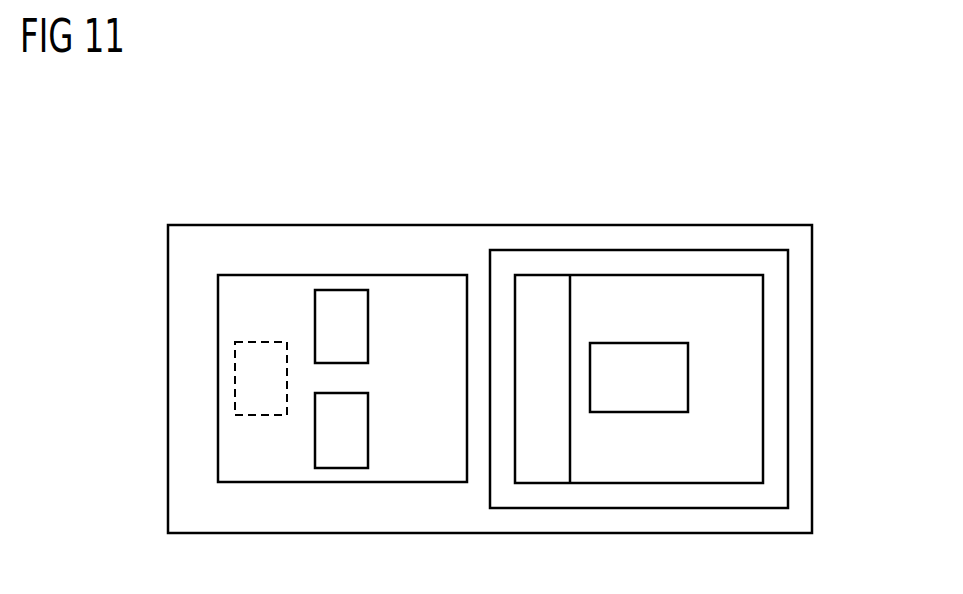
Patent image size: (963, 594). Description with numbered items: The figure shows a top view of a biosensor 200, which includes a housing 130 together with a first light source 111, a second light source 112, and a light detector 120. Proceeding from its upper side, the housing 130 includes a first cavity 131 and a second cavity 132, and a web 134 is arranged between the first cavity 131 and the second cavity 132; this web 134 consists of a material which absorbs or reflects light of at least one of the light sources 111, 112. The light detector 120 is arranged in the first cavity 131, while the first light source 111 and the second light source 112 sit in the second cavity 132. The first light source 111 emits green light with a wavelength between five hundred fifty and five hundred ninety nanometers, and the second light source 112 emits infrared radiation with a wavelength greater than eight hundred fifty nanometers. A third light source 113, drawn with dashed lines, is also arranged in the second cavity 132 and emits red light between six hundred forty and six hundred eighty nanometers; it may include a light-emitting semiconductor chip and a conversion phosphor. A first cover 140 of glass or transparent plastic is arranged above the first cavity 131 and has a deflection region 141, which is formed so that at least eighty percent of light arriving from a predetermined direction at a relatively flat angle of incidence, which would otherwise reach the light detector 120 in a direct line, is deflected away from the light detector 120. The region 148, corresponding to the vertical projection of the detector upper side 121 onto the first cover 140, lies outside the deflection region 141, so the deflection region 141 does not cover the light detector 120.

The biosensor 200 is at (175, 182).
The housing 130 is at (800, 292).
The second cavity 132 is at (258, 450).
The web 134 is at (474, 455).
The first light source 111 is at (340, 307).
The second light source 112 is at (340, 450).
The third light source 113 is at (252, 381).
The first cover 140 is at (780, 437).
The first cavity 131 is at (738, 448).
The deflection region 141 is at (543, 307).
The region 148 is at (638, 367).
The detector upper side 121 is at (677, 380).
The light detector 120 is at (637, 392).